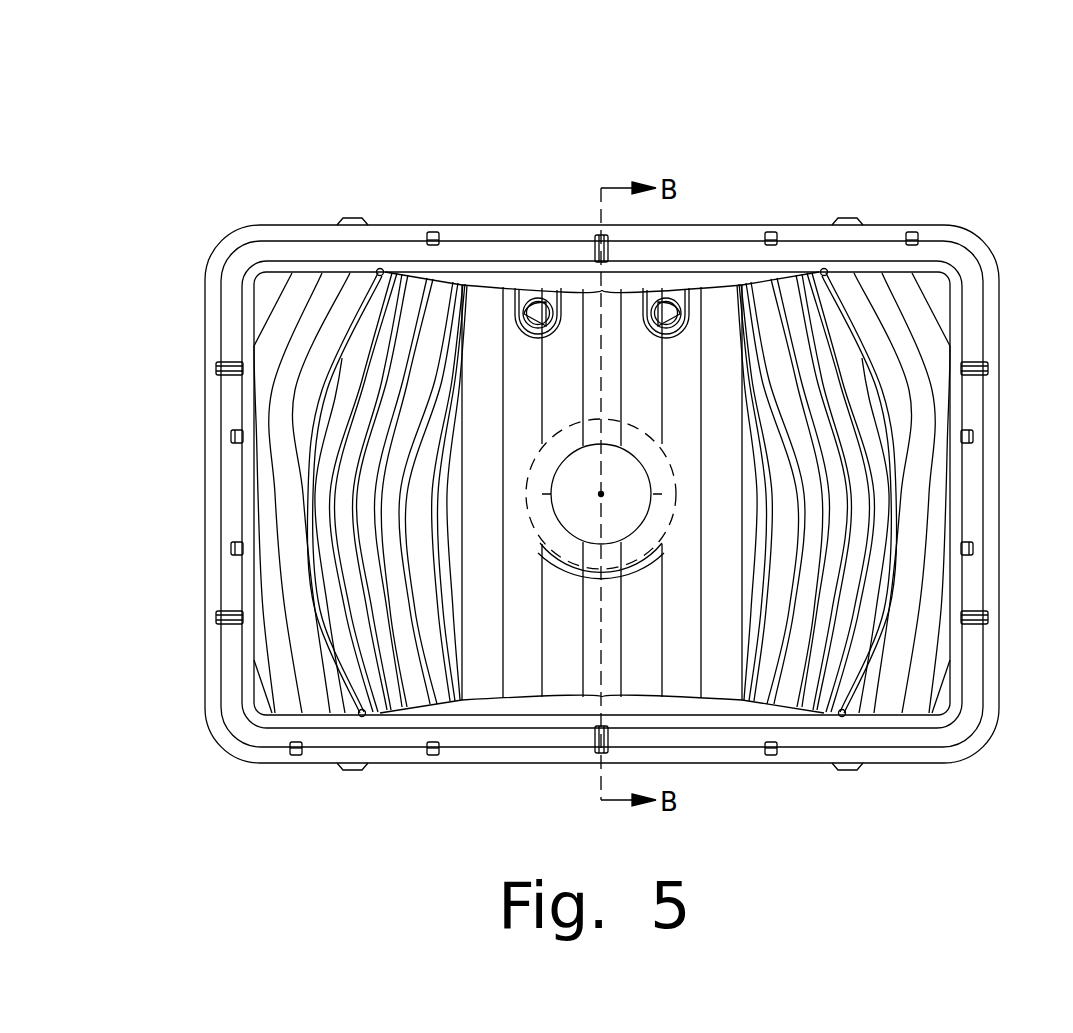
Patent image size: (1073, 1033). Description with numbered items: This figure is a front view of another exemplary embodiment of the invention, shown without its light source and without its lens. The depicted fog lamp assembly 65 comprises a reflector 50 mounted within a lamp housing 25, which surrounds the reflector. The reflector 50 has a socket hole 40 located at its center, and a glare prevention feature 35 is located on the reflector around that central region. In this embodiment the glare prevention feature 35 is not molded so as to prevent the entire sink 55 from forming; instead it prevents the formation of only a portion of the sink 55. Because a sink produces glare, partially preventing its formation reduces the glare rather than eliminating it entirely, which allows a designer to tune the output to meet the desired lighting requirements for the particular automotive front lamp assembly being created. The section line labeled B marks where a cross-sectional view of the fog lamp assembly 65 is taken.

The fog lamp assembly 65 is at (268, 152).
The lamp housing 25 is at (975, 305).
The reflector 50 is at (728, 663).
The sink 55 is at (652, 450).
The socket hole 40 is at (601, 494).
The glare prevention feature 35 is at (565, 585).